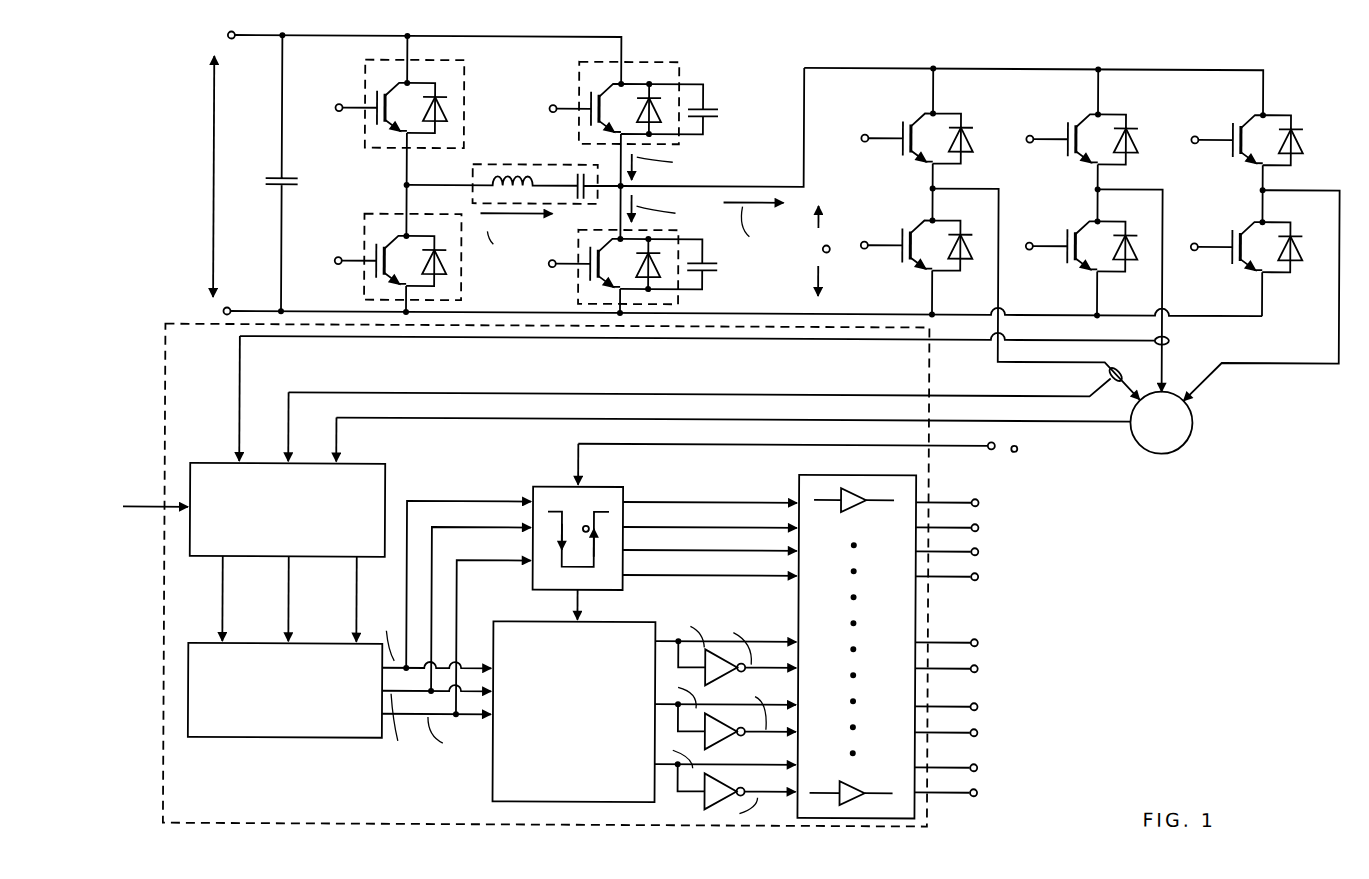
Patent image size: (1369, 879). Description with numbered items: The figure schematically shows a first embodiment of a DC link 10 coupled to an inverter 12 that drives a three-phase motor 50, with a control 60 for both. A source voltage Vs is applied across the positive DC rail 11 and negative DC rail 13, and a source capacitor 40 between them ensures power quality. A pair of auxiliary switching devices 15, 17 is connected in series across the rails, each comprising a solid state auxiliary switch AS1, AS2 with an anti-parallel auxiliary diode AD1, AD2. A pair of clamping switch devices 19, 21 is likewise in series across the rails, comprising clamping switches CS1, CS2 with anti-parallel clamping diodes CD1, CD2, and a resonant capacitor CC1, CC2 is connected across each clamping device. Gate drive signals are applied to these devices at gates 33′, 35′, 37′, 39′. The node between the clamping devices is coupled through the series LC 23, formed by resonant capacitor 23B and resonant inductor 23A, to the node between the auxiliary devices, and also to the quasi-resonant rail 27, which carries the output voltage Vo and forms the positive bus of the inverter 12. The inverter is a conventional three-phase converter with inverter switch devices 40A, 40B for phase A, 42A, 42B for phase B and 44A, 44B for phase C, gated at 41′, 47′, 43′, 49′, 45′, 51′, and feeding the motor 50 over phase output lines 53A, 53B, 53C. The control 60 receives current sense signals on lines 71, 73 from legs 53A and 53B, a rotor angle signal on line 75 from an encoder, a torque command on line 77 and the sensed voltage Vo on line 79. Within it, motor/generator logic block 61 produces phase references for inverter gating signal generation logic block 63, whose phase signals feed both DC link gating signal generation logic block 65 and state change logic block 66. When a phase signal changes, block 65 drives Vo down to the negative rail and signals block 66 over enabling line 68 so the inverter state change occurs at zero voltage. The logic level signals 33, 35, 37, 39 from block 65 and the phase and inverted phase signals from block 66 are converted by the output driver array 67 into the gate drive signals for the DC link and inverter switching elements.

The DC link 10 is at (190, 80).
The positive DC rail 11 is at (337, 38).
The inverter 12 is at (1185, 58).
The negative DC rail 13 is at (258, 309).
The auxiliary switching device 15 is at (366, 79).
The auxiliary switching device 17 is at (387, 215).
The clamping switch device 19 is at (679, 72).
The clamping switch device 21 is at (578, 238).
The series LC 23 is at (475, 173).
The resonant inductor 23A is at (581, 168).
The resonant capacitor 23B is at (500, 175).
The quasi-resonant rail 27 is at (761, 182).
The output signal 33 is at (688, 499).
The output signal 35 is at (713, 524).
The output signal 37 is at (697, 550).
The output signal 39 is at (728, 576).
The gate 33′ is at (345, 112).
The gate 35′ is at (352, 266).
The gate 37′ is at (556, 102).
The gate 39′ is at (556, 264).
The source capacitor 40 is at (274, 172).
The inverter switch device 40A is at (922, 110).
The inverter switch device 40B is at (922, 217).
The gate 41′ is at (873, 133).
The inverter switch device 42A is at (1087, 110).
The inverter switch device 42B is at (1087, 217).
The gate 43′ is at (1040, 133).
The inverter switch device 44A is at (1252, 110).
The inverter switch device 44B is at (1252, 217).
The gate 45′ is at (1205, 133).
The gate 47′ is at (880, 240).
The gate 49′ is at (1048, 240).
The three-phase motor 50 is at (1180, 437).
The gate 51′ is at (1213, 240).
The phase output line 53A is at (999, 260).
The phase output line 53B is at (1165, 260).
The phase output line 53C is at (1306, 365).
The control 60 is at (195, 321).
The motor/generator logic block 61 is at (214, 471).
The inverter gating signal generation logic block 63 is at (300, 730).
The DC link gating signal generation logic block 65 is at (542, 492).
The state change logic block 66 is at (495, 780).
The array of output drivers 67 is at (800, 480).
The enabling signal line 68 is at (568, 597).
The phase reference signal line 71 is at (322, 340).
The phase reference signal line 73 is at (520, 391).
The rotor angle signal line 75 is at (570, 418).
The torque command signal line 77 is at (160, 505).
The voltage sense line 79 is at (978, 448).
The auxiliary switch AS1 is at (366, 134).
The auxiliary switch AS2 is at (366, 240).
The auxiliary diode AD1 is at (462, 108).
The auxiliary diode AD2 is at (460, 283).
The clamping switch CS1 is at (592, 86).
The clamping switch CS2 is at (592, 279).
The clamping diode CD1 is at (657, 112).
The clamping diode CD2 is at (660, 270).
The resonant capacitor CC1 is at (718, 105).
The resonant capacitor CC2 is at (718, 263).